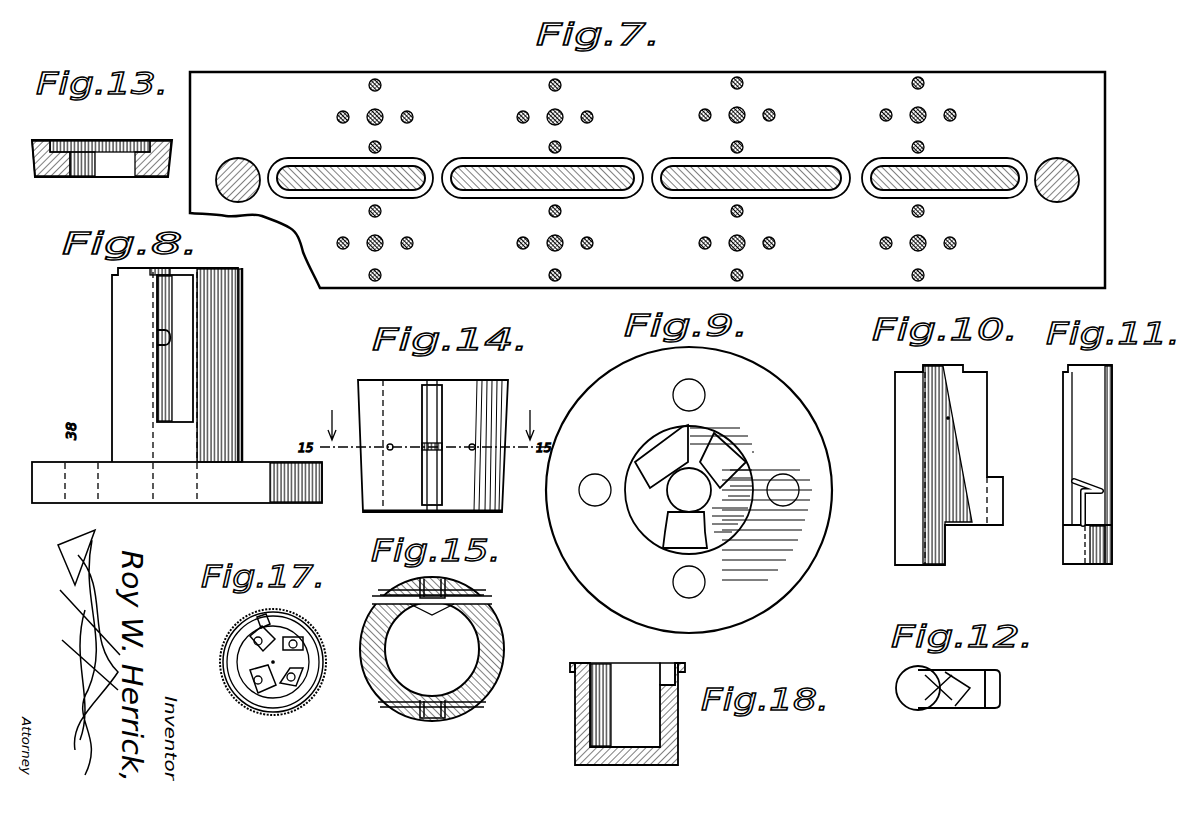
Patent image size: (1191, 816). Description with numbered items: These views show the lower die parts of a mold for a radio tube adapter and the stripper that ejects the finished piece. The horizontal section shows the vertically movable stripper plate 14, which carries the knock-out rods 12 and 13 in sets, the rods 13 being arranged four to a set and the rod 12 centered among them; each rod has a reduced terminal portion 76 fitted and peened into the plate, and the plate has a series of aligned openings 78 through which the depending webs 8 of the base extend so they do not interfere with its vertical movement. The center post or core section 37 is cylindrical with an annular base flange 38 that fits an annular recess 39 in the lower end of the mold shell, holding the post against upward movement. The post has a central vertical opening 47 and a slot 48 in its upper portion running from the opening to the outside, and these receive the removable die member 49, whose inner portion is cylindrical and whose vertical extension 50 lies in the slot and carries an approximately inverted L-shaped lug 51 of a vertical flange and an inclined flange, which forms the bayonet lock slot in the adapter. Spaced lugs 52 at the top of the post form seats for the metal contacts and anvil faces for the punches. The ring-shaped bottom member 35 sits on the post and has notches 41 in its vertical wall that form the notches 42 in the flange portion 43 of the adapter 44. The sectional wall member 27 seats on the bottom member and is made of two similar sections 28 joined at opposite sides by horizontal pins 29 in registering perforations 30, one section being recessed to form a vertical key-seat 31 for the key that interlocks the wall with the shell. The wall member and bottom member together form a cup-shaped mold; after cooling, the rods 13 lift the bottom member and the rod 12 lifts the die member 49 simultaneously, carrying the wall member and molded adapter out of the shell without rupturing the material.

In FIG. 7, the depending webs 8 is at (314, 178).
In FIG. 7, the knock-out rod 12 is at (381, 112).
In FIG. 7, the knock-out rods 13 is at (369, 86).
In FIG. 7, the stripper plate 14 is at (822, 72).
In FIG. 14, the sectional wall member 27 is at (501, 388).
In FIG. 14, the sections 28 is at (398, 392).
In FIG. 15, the sections 28 is at (383, 612).
In FIG. 14, the horizontal pins 29 is at (430, 445).
In FIG. 15, the horizontal pins 29 is at (420, 606).
In FIG. 14, the registering perforations 30 is at (388, 450).
In FIG. 15, the registering perforations 30 is at (416, 588).
In FIG. 14, the key-seat 31 is at (432, 385).
In FIG. 15, the key-seat 31 is at (432, 719).
In FIG. 13, the bottom member 35 is at (152, 178).
In FIG. 8, the center post or core section 37 is at (240, 366).
In FIG. 8, the annular base flange 38 is at (225, 483).
In FIG. 9, the annular base flange 38 is at (777, 397).
In FIG. 13, the annular recess 39 is at (40, 178).
In FIG. 13, the notches 41 is at (85, 140).
In FIG. 18, the notches 42 is at (570, 667).
In FIG. 17, the notches 42 is at (240, 624).
In FIG. 18, the flange portion 43 is at (673, 663).
In FIG. 17, the flange portion 43 is at (283, 607).
In FIG. 18, the adapter 44 is at (575, 698).
In FIG. 8, the central vertical opening 47 is at (175, 360).
In FIG. 9, the central vertical opening 47 is at (677, 484).
In FIG. 8, the slot 48 is at (163, 338).
In FIG. 9, the slot 48 is at (688, 500).
In FIG. 10, the removable die member 49 is at (895, 414).
In FIG. 11, the removable die member 49 is at (1063, 434).
In FIG. 12, the removable die member 49 is at (900, 675).
In FIG. 10, the vertical extension 50 is at (948, 418).
In FIG. 11, the vertical extension 50 is at (1078, 412).
In FIG. 12, the vertical extension 50 is at (978, 670).
In FIG. 10, the L-shaped lug 51 is at (993, 488).
In FIG. 11, the L-shaped lug 51 is at (1076, 494).
In FIG. 12, the L-shaped lug 51 is at (1000, 690).
In FIG. 9, the spaced lugs 52 is at (668, 455).
In FIG. 7, the reduced terminal portion 76 is at (228, 165).
In FIG. 7, the aligned openings 78 is at (337, 198).